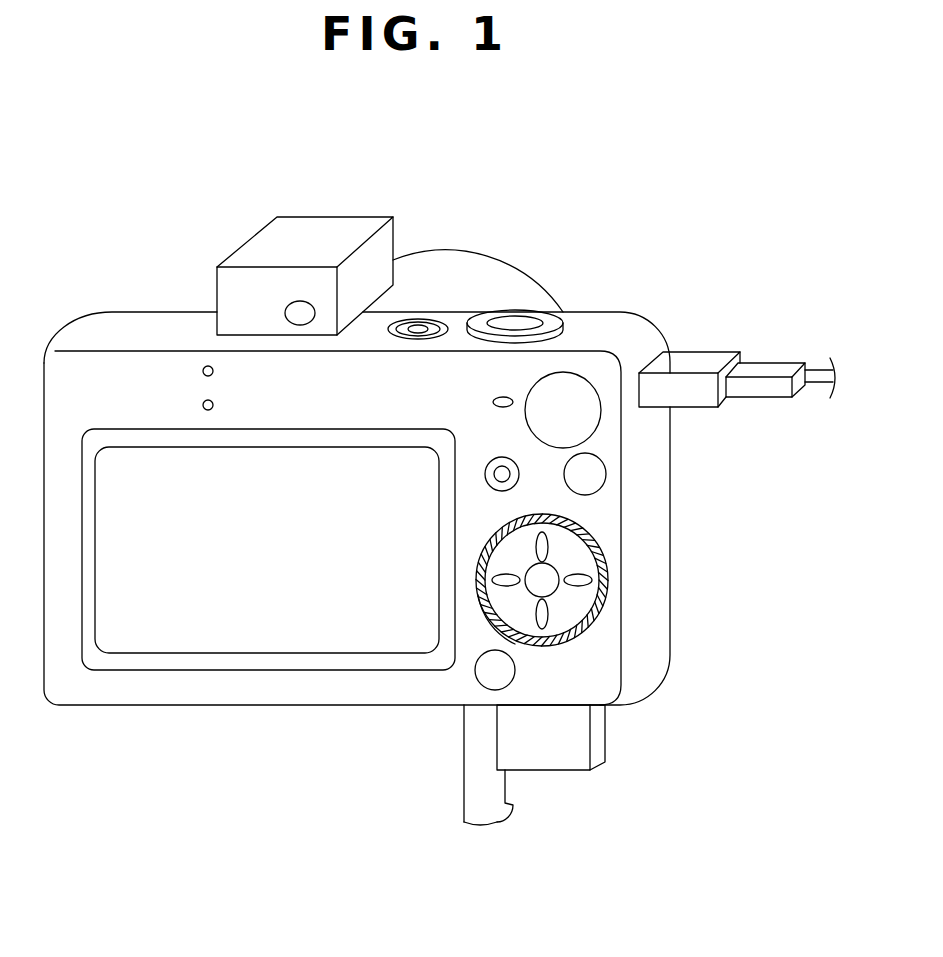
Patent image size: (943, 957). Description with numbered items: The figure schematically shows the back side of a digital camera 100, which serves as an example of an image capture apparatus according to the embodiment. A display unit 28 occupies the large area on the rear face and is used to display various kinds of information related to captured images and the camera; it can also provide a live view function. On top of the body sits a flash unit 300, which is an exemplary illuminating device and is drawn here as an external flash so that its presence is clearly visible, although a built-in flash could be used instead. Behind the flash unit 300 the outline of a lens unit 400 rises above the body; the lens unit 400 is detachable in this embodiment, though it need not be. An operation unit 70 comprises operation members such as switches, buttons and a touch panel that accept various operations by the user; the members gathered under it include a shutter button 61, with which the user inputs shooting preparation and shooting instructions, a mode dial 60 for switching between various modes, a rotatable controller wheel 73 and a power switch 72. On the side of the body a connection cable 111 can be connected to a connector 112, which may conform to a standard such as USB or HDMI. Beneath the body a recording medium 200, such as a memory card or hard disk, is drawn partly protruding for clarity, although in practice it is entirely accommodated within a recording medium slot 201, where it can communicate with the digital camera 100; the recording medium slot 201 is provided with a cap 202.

The digital camera 100 is at (137, 745).
The display unit 28 is at (152, 462).
The flash unit 300 is at (305, 233).
The lens unit 400 is at (463, 255).
The shutter button 61 is at (516, 322).
The power switch 72 is at (412, 337).
The mode dial 60 is at (540, 393).
The operation unit 70 is at (435, 336).
The controller wheel 73 is at (480, 595).
The connector 112 is at (692, 362).
The connection cable 111 is at (770, 372).
The recording medium 200 is at (552, 760).
The recording medium slot 201 is at (515, 708).
The cap 202 is at (488, 825).